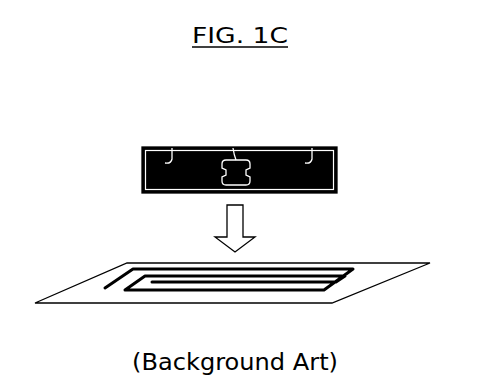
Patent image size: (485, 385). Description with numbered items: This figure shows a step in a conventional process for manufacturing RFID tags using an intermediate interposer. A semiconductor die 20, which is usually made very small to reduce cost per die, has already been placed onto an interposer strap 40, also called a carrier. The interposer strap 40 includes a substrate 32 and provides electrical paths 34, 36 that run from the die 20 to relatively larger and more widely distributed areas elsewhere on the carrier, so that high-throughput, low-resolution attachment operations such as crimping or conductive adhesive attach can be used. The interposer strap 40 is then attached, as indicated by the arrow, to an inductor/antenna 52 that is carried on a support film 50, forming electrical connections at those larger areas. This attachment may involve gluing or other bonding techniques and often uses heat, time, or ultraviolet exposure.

The die 20 is at (233, 148).
The substrate 32 is at (202, 193).
The electrical path 34 is at (172, 148).
The electrical path 36 is at (312, 148).
The interposer strap 40 is at (279, 150).
The support film 50 is at (232, 268).
The inductor/antenna 52 is at (345, 272).